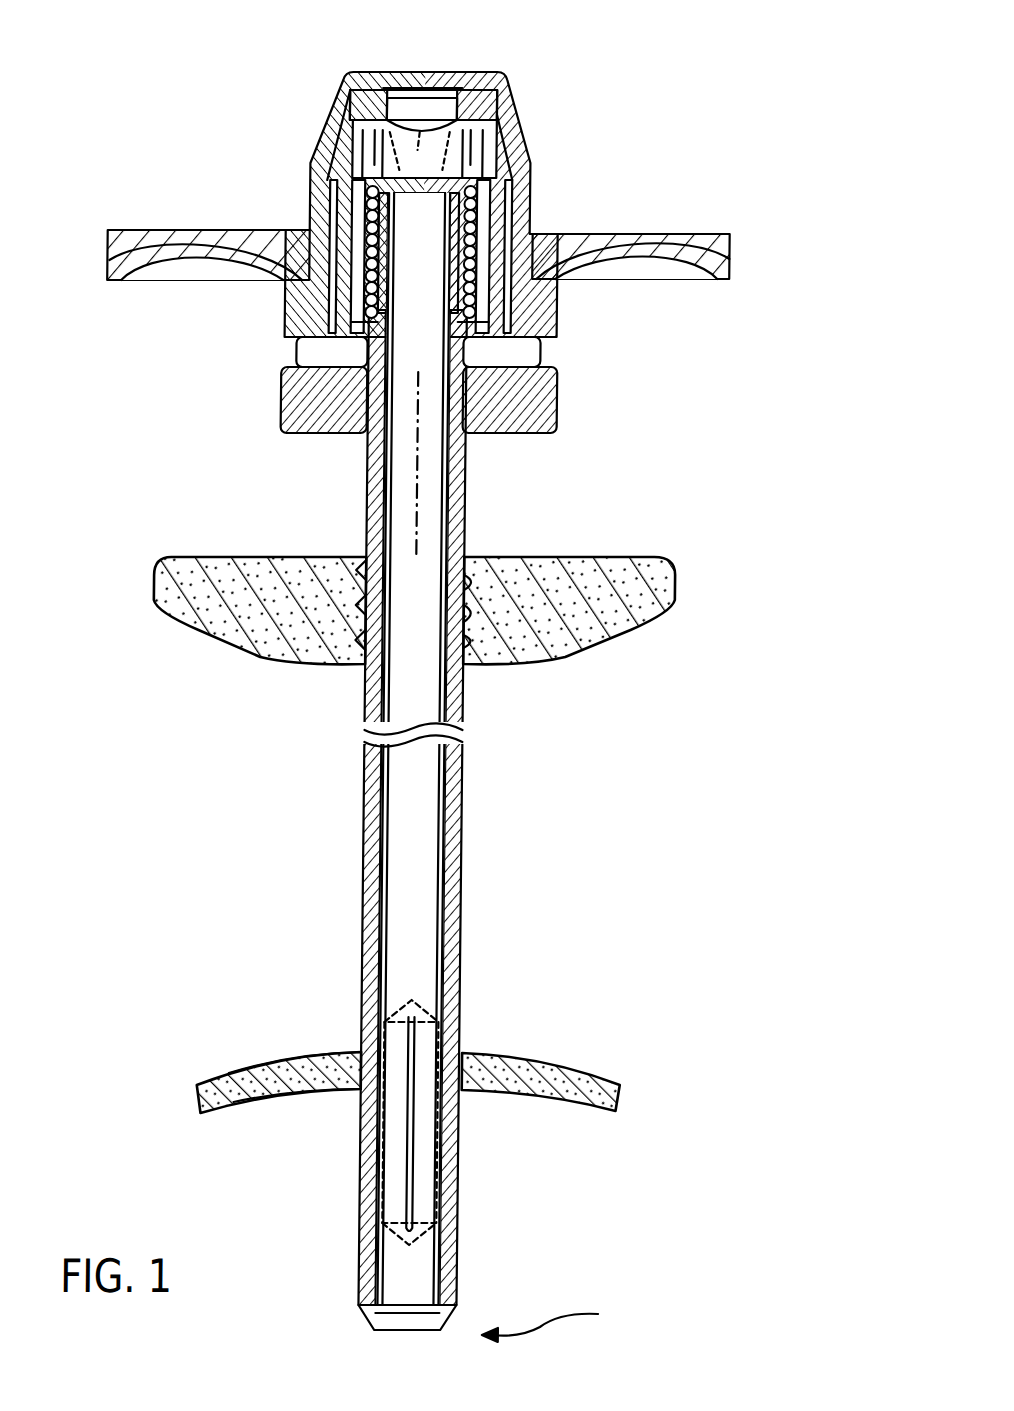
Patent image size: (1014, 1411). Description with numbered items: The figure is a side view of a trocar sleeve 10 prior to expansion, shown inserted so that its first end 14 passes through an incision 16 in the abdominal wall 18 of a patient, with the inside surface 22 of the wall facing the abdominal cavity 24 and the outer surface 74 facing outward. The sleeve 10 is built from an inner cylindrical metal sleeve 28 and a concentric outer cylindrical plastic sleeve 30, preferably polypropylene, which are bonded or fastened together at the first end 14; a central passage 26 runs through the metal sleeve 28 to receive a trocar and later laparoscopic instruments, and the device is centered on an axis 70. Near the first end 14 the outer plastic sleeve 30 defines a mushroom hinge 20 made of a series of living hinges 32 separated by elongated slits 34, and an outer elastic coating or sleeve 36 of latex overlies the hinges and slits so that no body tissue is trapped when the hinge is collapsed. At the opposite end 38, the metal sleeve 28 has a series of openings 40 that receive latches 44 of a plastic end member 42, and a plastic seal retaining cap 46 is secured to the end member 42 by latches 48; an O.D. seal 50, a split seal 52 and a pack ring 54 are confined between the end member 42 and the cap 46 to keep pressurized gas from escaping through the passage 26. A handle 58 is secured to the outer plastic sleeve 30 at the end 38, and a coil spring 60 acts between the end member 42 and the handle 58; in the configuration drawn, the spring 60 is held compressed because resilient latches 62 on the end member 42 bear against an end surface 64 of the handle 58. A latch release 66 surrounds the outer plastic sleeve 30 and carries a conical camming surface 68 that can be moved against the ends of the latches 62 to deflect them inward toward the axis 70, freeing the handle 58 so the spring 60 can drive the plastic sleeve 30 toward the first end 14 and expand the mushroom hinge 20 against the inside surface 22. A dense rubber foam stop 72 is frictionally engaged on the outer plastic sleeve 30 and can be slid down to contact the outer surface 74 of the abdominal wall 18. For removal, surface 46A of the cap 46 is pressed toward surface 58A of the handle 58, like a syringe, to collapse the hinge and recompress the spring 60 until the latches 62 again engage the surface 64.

The trocar sleeve 10 is at (304, 686).
The first end 14 is at (556, 1316).
The incision 16 is at (478, 996).
The abdominal wall 18 is at (198, 1100).
The mushroom hinge 20 is at (362, 1174).
The inside surface 22 is at (242, 1114).
The abdominal cavity 24 is at (574, 1254).
The passage 26 is at (400, 677).
The inner cylindrical metal sleeve 28 is at (456, 838).
The outer cylindrical plastic sleeve 30 is at (466, 870).
The living hinges 32 is at (416, 1124).
The elongated slits 34 is at (414, 1204).
The outer elastic coating or sleeve 36 is at (460, 1282).
The end 38 is at (294, 214).
The openings 40 is at (462, 290).
The plastic end member 42 is at (364, 150).
The latches 44 is at (462, 244).
The plastic seal retaining cap 46 is at (494, 80).
The surface 46A is at (484, 78).
The latches 48 is at (516, 204).
The O.D. seal 50 is at (446, 88).
The split seal 52 is at (456, 170).
The pack ring 54 is at (342, 80).
The handle 58 is at (116, 270).
The surface 58A is at (224, 274).
The coil spring 60 is at (464, 320).
The resilient latches 62 is at (532, 342).
The end surface 64 is at (296, 346).
The latch release 66 is at (330, 427).
The conical camming surface 68 is at (532, 422).
The axis 70 is at (420, 500).
The dense rubber foam stop 72 is at (552, 612).
The outer surface 74 is at (238, 1071).